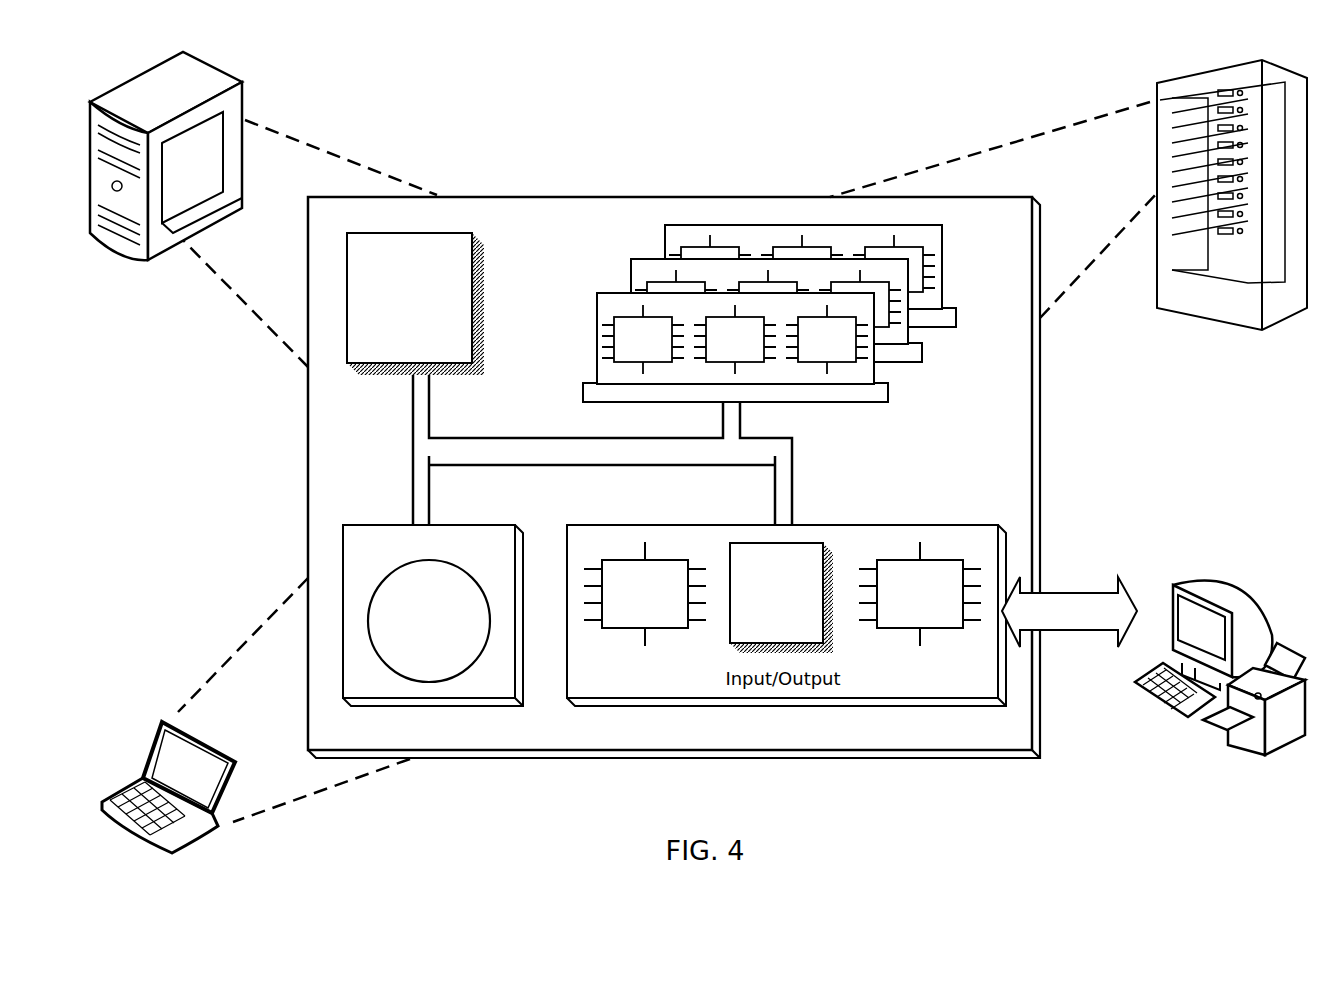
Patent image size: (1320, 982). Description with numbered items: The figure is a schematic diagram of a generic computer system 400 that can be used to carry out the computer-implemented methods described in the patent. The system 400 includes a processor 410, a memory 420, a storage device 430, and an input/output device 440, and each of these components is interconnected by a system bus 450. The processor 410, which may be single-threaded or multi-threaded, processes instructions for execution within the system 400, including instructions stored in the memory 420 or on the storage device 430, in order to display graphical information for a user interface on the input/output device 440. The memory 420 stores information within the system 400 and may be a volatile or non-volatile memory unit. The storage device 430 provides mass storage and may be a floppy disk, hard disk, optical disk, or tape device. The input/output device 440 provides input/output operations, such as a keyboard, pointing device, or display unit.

The computer system 400 is at (497, 78).
The processor 410 is at (415, 304).
The memory 420 is at (947, 363).
The storage device 430 is at (433, 615).
The input/output device 440 is at (1170, 582).
The system bus 450 is at (593, 456).